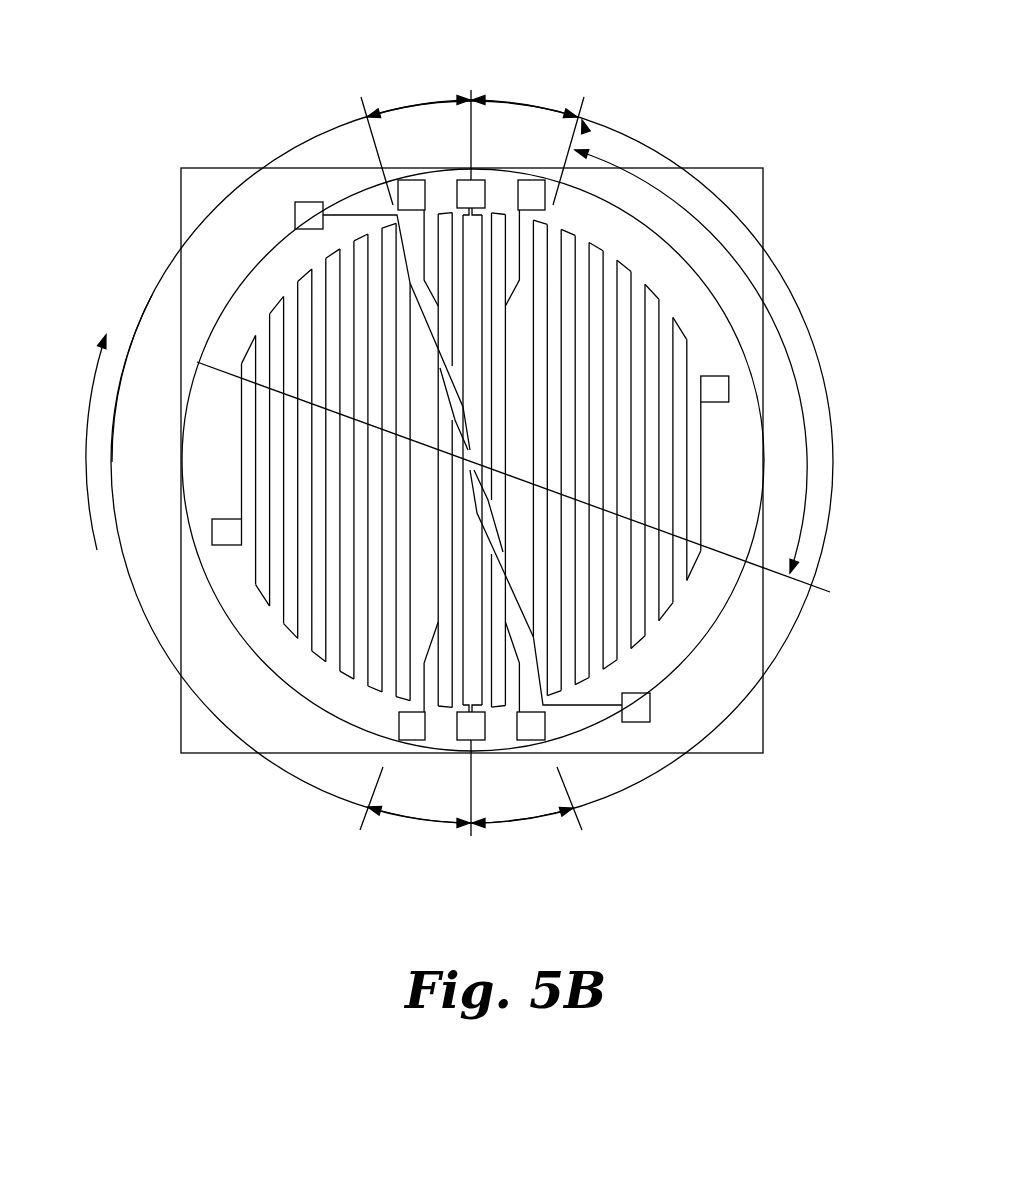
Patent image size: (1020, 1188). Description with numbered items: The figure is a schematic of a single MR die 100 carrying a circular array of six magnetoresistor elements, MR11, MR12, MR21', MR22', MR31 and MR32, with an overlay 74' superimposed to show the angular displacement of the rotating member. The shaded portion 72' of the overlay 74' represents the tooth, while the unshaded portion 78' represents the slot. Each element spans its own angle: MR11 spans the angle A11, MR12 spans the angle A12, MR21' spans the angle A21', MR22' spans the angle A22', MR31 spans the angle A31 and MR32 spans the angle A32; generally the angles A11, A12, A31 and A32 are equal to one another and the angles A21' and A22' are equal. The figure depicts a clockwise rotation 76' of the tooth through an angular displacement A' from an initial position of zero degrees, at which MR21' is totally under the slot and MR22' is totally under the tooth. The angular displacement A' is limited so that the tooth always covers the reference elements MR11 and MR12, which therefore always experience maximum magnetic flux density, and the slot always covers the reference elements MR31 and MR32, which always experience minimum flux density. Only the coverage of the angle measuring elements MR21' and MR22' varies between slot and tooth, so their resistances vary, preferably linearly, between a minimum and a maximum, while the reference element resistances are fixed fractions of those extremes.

The MR die 100 is at (772, 172).
The shaded portion of the overlay 72' is at (442, 460).
The overlay 74' is at (224, 645).
The clockwise rotation 76' is at (80, 442).
The unshaded portion of the overlay 78' is at (297, 740).
The angular displacement A' is at (522, 371).
The angle spanned by MR21' A21' is at (521, 463).
The angle spanned by MR22' A22' is at (95, 352).
The angle spanned by MR12 A12 is at (431, 102).
The angle spanned by MR11 A11 is at (525, 104).
The angle spanned by MR32 A32 is at (432, 823).
The angle spanned by MR31 A31 is at (527, 823).
The magnetoresistor element MR12 is at (444, 212).
The magnetoresistor element MR11 is at (498, 212).
The magnetoresistor element MR22' is at (236, 516).
The magnetoresistor element MR21' is at (714, 457).
The magnetoresistor element MR32 is at (446, 712).
The magnetoresistor element MR31 is at (497, 712).